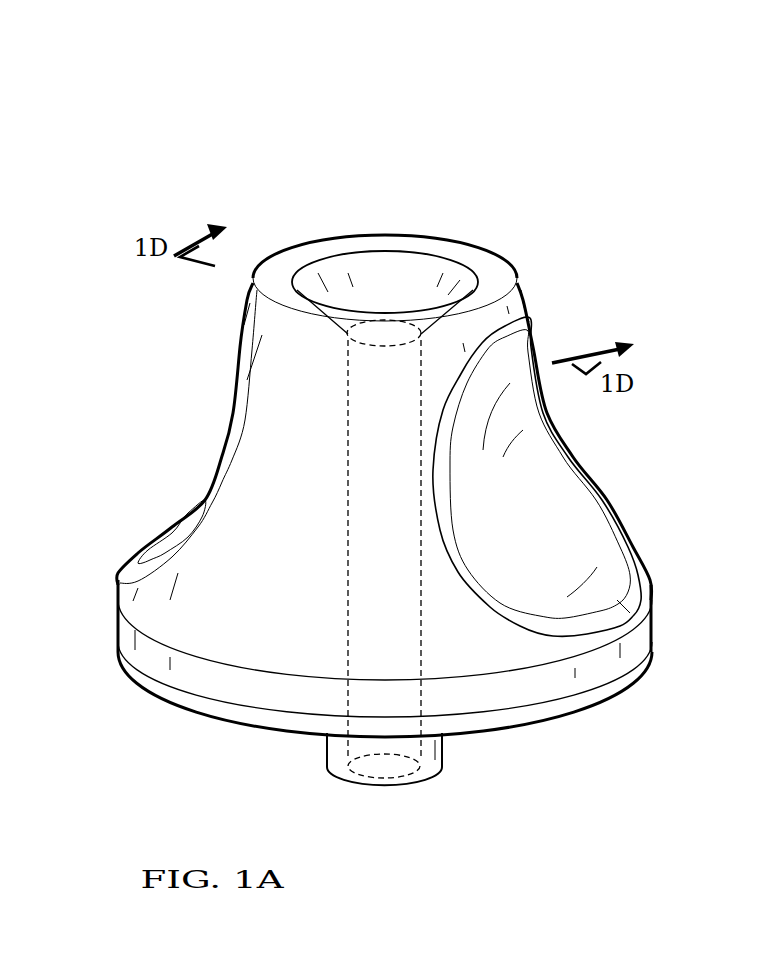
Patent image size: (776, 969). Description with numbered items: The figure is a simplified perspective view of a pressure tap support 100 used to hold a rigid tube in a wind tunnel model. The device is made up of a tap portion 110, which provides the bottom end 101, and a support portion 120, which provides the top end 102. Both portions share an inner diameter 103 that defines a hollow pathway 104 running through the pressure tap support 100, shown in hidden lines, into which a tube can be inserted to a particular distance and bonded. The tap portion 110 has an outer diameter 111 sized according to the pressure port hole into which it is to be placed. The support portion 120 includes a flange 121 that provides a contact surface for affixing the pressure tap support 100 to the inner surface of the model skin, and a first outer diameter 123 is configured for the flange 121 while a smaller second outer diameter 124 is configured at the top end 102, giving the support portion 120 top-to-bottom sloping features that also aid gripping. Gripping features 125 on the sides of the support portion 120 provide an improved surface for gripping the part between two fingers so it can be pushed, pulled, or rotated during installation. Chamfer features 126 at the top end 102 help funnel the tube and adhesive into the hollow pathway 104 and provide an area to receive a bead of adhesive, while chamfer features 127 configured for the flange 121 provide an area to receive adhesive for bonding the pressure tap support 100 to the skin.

The pressure tap support 100 is at (560, 227).
The bottom end 101 is at (338, 778).
The top end 102 is at (445, 249).
The inner diameter 103 is at (348, 787).
The hollow pathway 104 is at (334, 556).
The tap portion 110 is at (452, 753).
The outer diameter 111 is at (327, 777).
The support portion 120 is at (243, 634).
The flange 121 is at (666, 580).
The first outer diameter 123 is at (651, 570).
The second outer diameter 124 is at (516, 263).
The gripping features 125 is at (229, 426).
The chamfer features 126 is at (398, 272).
The chamfer features 127 is at (581, 696).